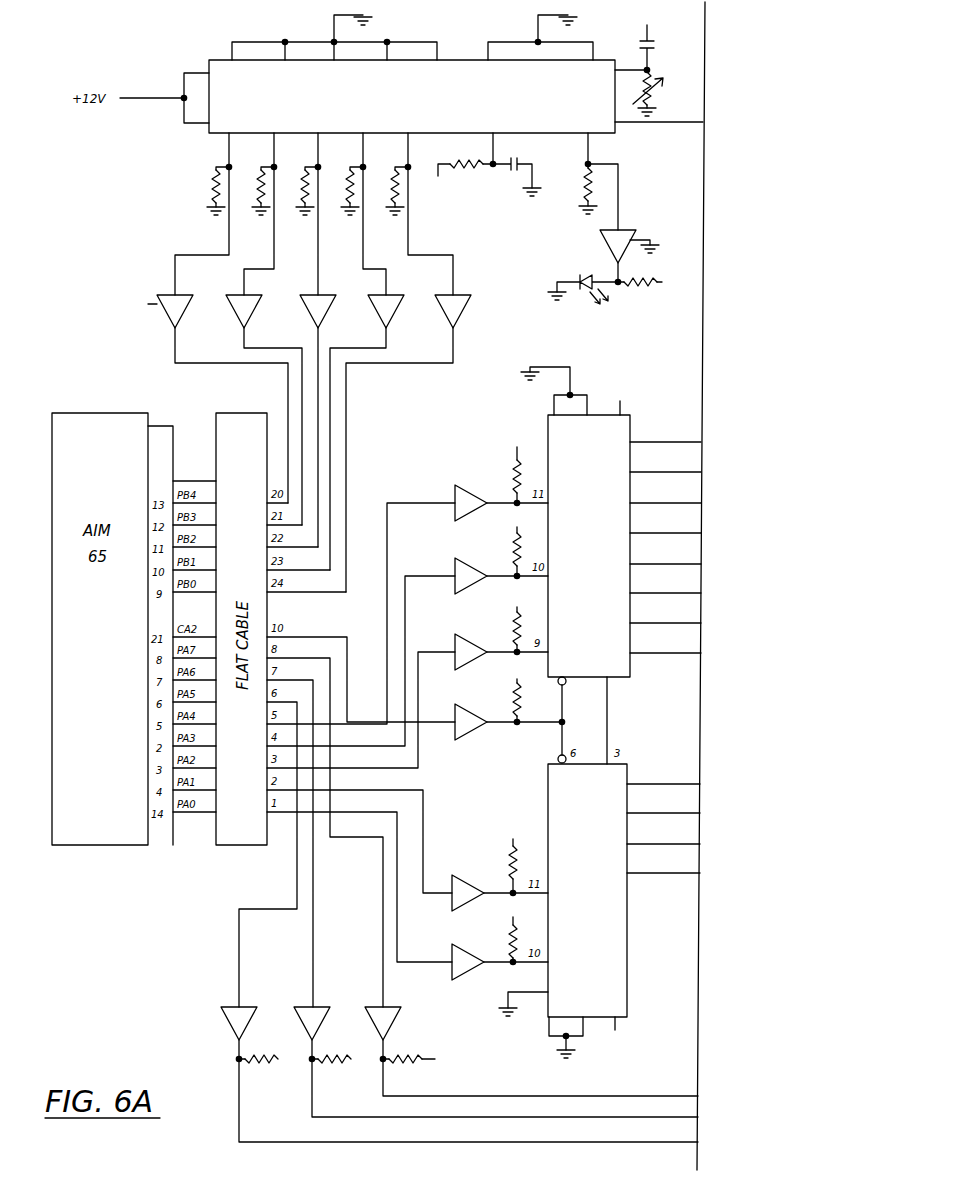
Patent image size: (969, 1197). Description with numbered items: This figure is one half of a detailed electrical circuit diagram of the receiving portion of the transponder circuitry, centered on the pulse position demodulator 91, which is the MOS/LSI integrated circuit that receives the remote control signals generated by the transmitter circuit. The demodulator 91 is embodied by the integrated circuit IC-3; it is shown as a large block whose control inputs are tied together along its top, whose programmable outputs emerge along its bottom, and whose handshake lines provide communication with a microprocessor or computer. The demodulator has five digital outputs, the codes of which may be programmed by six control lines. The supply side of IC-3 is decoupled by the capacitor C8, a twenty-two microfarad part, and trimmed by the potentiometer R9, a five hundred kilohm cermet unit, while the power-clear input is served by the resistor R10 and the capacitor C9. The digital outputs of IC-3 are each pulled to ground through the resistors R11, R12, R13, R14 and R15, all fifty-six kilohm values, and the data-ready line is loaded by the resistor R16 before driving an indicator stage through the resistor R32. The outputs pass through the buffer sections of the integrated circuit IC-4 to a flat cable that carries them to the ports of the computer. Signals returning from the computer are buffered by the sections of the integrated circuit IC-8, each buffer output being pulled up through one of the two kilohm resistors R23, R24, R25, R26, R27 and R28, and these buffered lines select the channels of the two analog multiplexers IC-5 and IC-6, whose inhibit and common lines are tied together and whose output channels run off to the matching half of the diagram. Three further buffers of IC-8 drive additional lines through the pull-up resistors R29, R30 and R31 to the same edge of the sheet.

The pulse position demodulator 91 is at (482, 30).
The ML 924 integrated circuit IC-3 is at (408, 90).
The 4050 integrated circuit IC-4 is at (228, 311).
The 4051 integrated circuit IC-5 is at (595, 537).
The 4051 integrated circuit IC-6 is at (589, 907).
The 7407 integrated circuit IC-8 is at (454, 560).
The capacitor C8 is at (652, 39).
The capacitor C9 is at (517, 170).
The potentiometer R9 is at (655, 93).
The resistor R10 is at (456, 169).
The resistor R11 is at (390, 191).
The resistor R12 is at (345, 191).
The resistor R13 is at (300, 191).
The resistor R14 is at (256, 191).
The resistor R15 is at (211, 191).
The resistor R16 is at (576, 189).
The resistor R23 is at (513, 468).
The resistor R24 is at (513, 544).
The resistor R25 is at (513, 622).
The resistor R26 is at (513, 693).
The resistor R27 is at (509, 859).
The resistor R28 is at (509, 932).
The resistor R29 is at (269, 1060).
The resistor R30 is at (342, 1060).
The resistor R31 is at (425, 1054).
The resistor R32 is at (658, 277).